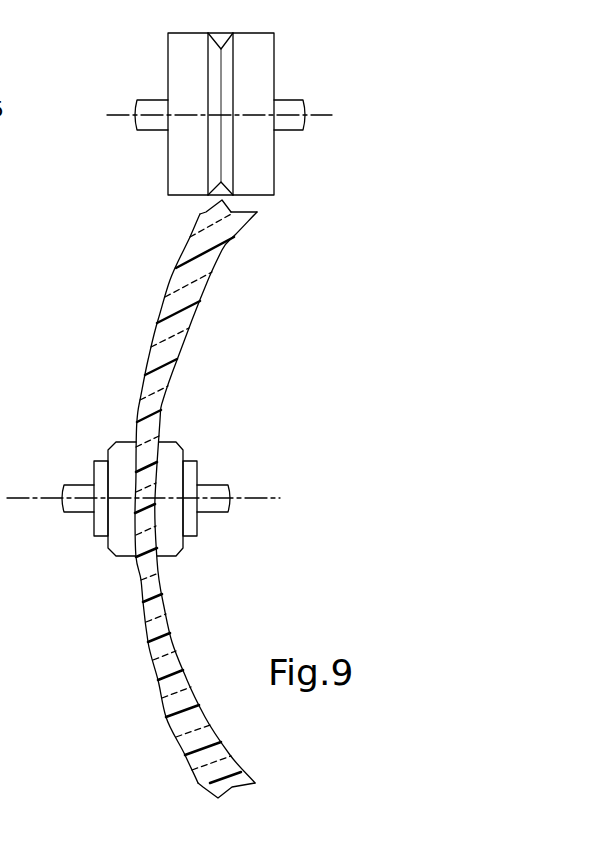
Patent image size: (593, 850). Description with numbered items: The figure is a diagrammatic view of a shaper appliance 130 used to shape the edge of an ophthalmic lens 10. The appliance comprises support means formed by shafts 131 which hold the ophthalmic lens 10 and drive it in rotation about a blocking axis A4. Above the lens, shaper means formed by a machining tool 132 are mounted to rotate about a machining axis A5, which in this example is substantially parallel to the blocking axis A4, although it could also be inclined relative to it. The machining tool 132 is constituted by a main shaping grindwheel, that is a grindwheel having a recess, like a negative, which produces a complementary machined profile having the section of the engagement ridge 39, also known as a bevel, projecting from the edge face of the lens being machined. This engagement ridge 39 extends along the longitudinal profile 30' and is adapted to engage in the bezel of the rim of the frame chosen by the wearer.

The ophthalmic lens 10 is at (152, 722).
The longitudinal profile 30' is at (179, 202).
The engagement ridge 39 is at (233, 205).
The shaper appliance 130 is at (105, 328).
The shafts 131 is at (71, 483).
The machining tool 132 is at (287, 72).
The blocking axis A4 is at (275, 500).
The machining axis A5 is at (333, 118).